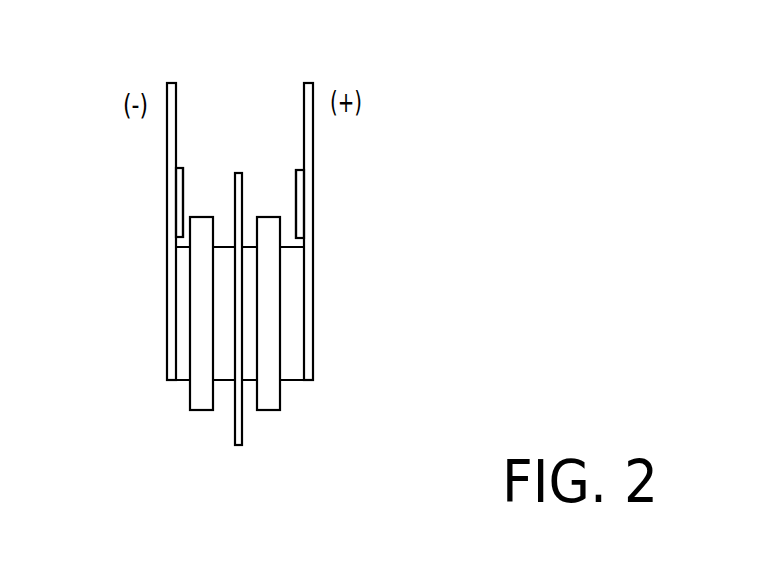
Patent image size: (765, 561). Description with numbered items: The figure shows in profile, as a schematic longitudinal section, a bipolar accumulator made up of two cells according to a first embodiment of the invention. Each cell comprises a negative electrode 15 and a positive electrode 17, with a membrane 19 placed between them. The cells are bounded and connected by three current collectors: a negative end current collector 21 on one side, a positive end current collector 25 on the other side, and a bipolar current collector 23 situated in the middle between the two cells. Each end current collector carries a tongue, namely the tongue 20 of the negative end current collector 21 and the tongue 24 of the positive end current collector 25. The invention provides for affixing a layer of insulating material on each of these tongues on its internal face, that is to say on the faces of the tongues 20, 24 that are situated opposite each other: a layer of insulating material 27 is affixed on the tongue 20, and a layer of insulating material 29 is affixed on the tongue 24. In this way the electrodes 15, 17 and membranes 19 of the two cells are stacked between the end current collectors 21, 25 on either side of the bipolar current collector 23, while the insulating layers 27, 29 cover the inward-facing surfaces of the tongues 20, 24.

The negative electrode 15 is at (183, 357).
The positive electrode 17 is at (223, 278).
The membrane 19 is at (195, 395).
The tongue 20 is at (176, 168).
The negative end current collector 21 is at (172, 86).
The bipolar current collector 23 is at (237, 173).
The tongue 24 is at (304, 172).
The positive end current collector 25 is at (308, 87).
The layer of insulating material 27 is at (178, 183).
The layer of insulating material 29 is at (300, 185).